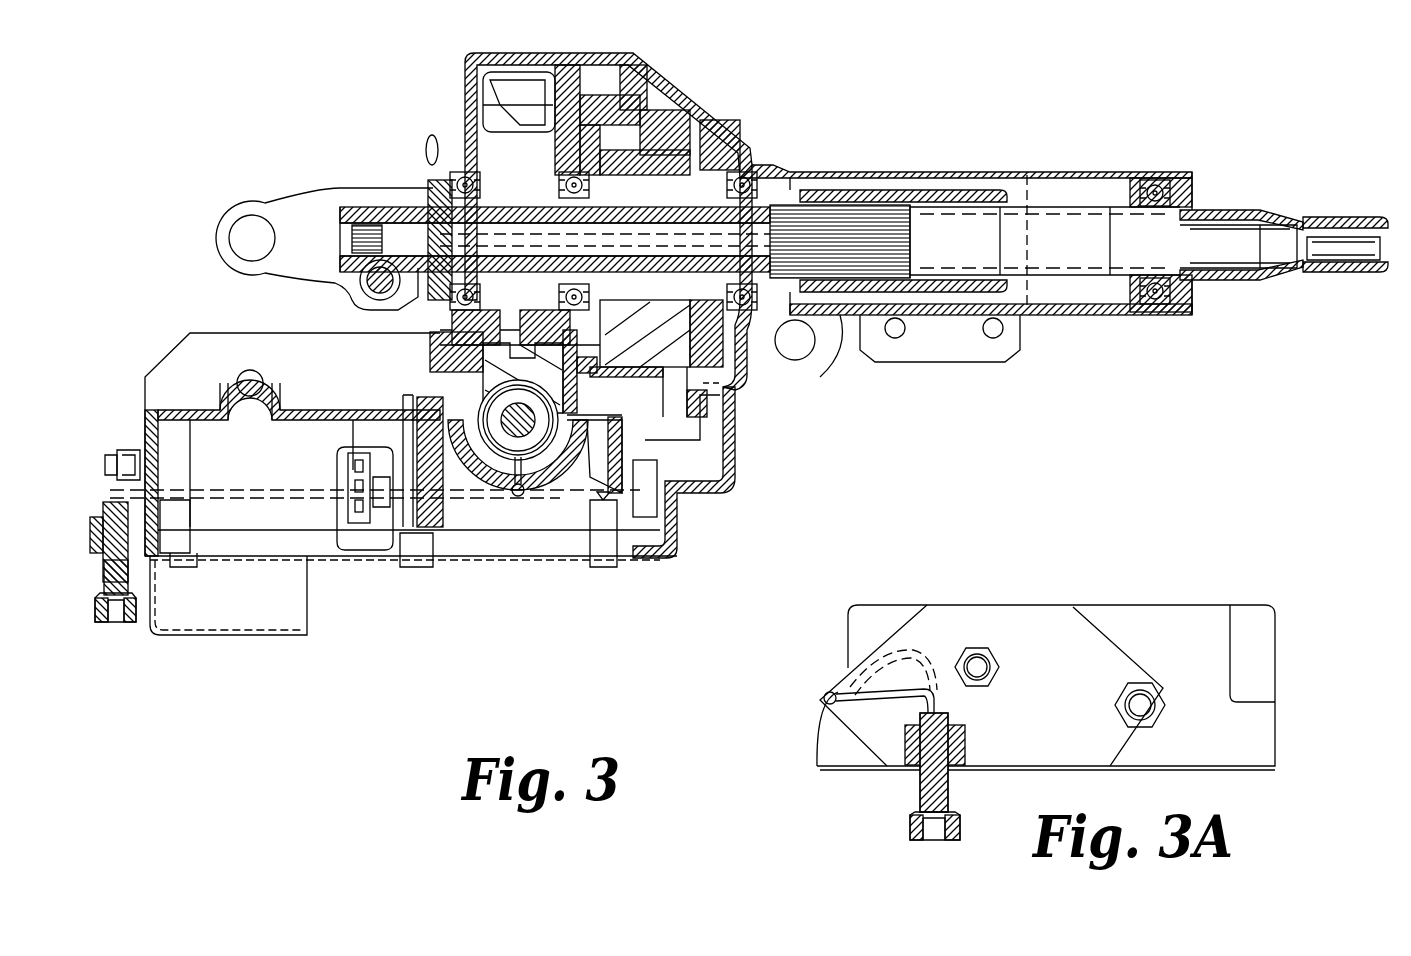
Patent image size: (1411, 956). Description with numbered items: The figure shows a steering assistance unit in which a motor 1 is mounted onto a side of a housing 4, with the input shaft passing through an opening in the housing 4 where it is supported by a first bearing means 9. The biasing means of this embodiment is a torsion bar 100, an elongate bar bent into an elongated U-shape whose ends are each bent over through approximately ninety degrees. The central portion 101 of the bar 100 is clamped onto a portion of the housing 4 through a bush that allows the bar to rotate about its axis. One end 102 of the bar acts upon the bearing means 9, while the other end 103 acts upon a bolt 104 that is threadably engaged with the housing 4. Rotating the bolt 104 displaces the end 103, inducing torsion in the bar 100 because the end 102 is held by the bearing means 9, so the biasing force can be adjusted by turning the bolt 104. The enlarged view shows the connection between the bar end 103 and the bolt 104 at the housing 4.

In FIG. 3, the motor 1 is at (884, 149).
In FIG. 3, the housing 4 is at (737, 428).
In FIG. 3A, the housing 4 is at (818, 717).
In FIG. 3, the first bearing means 9 is at (473, 372).
In FIG. 3, the torsion bar 100 is at (470, 496).
In FIG. 3, the central portion 101 is at (298, 500).
In FIG. 3, the one end 102 is at (525, 497).
In FIG. 3, the other end 103 is at (110, 492).
In FIG. 3A, the other end 103 is at (875, 690).
In FIG. 3, the bolt 104 is at (104, 566).
In FIG. 3A, the bolt 104 is at (920, 788).